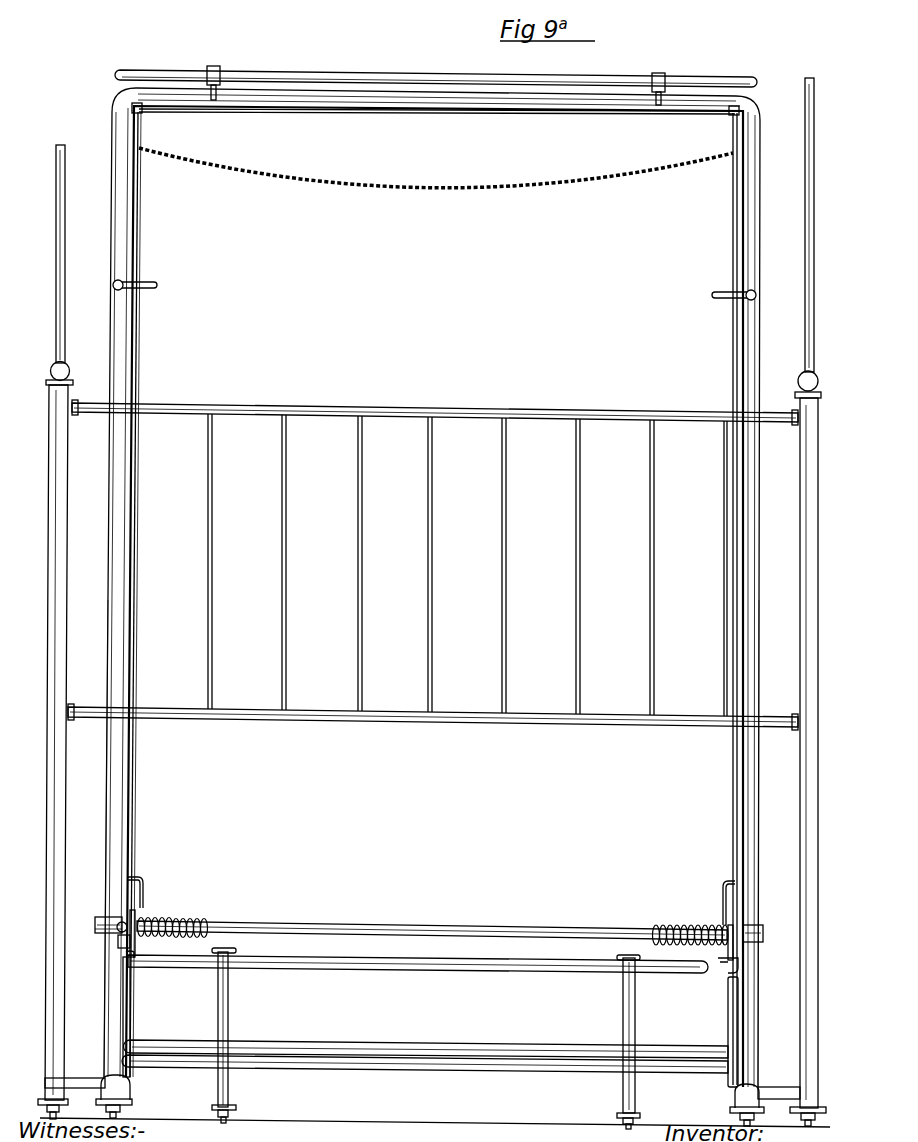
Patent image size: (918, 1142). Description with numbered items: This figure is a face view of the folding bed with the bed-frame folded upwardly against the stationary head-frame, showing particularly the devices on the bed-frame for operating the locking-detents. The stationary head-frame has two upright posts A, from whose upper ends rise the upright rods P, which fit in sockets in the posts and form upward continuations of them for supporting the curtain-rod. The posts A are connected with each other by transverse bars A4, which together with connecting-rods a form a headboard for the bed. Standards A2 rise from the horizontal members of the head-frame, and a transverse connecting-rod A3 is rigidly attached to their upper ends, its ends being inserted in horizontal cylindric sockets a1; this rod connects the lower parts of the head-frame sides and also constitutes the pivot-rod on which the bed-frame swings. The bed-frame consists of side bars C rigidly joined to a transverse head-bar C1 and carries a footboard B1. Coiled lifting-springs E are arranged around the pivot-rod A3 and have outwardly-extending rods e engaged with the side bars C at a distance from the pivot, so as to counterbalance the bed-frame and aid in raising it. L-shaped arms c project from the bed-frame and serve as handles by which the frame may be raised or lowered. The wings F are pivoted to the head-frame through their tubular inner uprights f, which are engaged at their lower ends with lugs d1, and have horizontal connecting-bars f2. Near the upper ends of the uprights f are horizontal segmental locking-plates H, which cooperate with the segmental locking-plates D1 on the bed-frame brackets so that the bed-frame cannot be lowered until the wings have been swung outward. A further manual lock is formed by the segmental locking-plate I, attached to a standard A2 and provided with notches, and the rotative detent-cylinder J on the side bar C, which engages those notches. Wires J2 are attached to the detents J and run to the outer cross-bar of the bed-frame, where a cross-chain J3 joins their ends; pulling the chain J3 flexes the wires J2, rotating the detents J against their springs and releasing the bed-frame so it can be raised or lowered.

The upright rod P is at (65, 180).
The footboard B1 is at (352, 61).
The side bar C is at (800, 800).
The transverse head-bar C1 is at (400, 89).
The upright post A is at (431, 843).
The wire J2 is at (141, 258).
The cross-chain J3 is at (418, 197).
The L-shaped arm c is at (152, 290).
The transverse bar A4 is at (394, 411).
The connecting-rod a is at (208, 609).
The outwardly-extending rod e is at (143, 872).
The segmental locking-plate D1 is at (118, 916).
The horizontal cylindric socket a1 is at (96, 926).
The pivot d is at (118, 931).
The lifting-spring E is at (183, 920).
The transverse connecting-rod A3 is at (463, 918).
The segmental locking-plate I is at (136, 945).
The horizontal segmental locking-plate H is at (131, 968).
The locking-detent J is at (736, 972).
The wing F is at (418, 975).
The inner upright f is at (123, 986).
The horizontal connecting-bar f2 is at (186, 967).
The standard A2 is at (108, 1028).
The lug d1 is at (118, 1079).